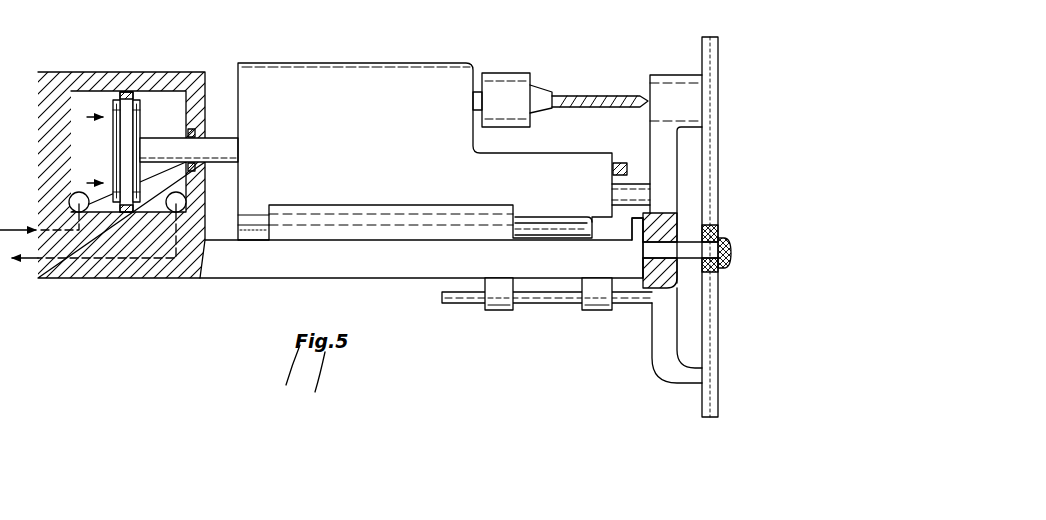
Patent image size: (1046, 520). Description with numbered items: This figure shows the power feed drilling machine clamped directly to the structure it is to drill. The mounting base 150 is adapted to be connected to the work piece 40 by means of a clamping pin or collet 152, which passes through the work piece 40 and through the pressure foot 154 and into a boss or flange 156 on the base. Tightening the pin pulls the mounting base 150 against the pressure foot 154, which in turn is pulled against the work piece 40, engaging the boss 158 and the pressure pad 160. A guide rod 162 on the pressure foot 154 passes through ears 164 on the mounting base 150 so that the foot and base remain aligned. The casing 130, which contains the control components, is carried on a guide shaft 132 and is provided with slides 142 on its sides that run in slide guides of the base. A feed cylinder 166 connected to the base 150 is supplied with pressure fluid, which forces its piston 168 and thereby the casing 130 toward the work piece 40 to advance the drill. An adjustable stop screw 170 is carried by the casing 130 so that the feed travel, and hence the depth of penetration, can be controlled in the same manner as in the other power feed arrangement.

The work piece 40 is at (707, 56).
The casing 130 is at (443, 151).
The guide shaft 132 is at (617, 198).
The slides 142 is at (523, 215).
The mounting base 150 is at (421, 248).
The clamping pin or collet 152 is at (720, 228).
The pressure foot 154 is at (667, 168).
The boss or flange 156 is at (633, 231).
The boss 158 is at (695, 377).
The pressure pad 160 is at (693, 98).
The guide rod 162 is at (537, 298).
The ears 164 is at (597, 307).
The feed cylinder 166 is at (68, 73).
The piston 168 is at (143, 183).
The adjustable stop screw 170 is at (623, 160).